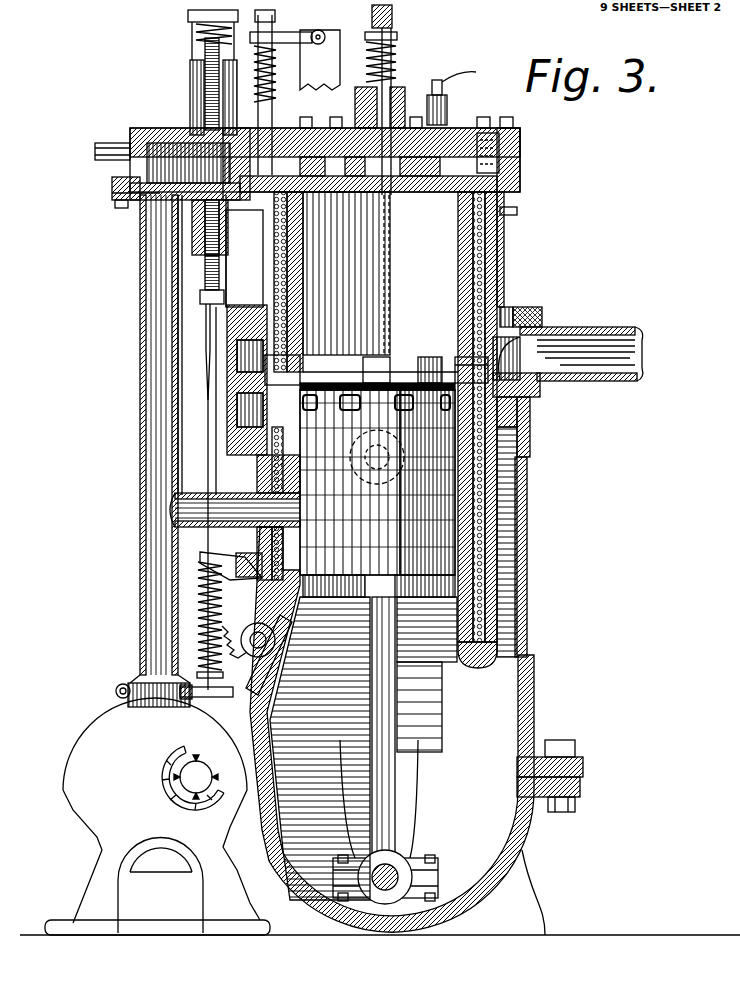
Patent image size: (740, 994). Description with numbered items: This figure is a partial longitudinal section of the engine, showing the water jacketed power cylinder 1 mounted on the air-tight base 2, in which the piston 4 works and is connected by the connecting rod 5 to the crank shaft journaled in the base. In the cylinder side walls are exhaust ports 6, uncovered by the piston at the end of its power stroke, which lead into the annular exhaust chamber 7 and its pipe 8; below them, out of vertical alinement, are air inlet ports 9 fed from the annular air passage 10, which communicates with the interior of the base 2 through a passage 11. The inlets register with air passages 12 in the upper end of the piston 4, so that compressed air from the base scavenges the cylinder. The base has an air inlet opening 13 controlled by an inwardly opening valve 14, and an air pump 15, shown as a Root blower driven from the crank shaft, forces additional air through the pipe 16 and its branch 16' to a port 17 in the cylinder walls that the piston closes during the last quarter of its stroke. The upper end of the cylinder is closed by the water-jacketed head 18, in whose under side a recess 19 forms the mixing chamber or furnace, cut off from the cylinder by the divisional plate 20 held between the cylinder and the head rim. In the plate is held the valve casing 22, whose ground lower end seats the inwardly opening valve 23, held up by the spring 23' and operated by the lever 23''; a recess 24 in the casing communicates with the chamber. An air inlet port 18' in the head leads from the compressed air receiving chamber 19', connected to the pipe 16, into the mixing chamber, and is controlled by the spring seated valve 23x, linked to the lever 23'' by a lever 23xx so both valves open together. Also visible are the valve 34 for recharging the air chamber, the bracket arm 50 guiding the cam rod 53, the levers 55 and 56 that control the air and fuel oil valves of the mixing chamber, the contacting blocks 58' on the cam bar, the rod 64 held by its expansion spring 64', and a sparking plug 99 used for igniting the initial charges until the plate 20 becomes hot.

The power cylinder 1 is at (391, 430).
The base 2 is at (416, 731).
The piston 4 is at (352, 522).
The connecting rod 5 is at (385, 725).
The exhaust ports 6 is at (410, 352).
The annular exhaust chamber 7 is at (232, 350).
The pipe 8 is at (603, 330).
The air inlet ports 9 is at (526, 458).
The annular air passage 10 is at (520, 416).
The passage 11 is at (505, 522).
The air passages 12 is at (398, 440).
The air inlet opening 13 is at (292, 700).
The inwardly opening valve 14 is at (257, 645).
The air pump 15 is at (157, 816).
The pipe 16 is at (137, 451).
The branch 16' is at (194, 512).
The port 17 is at (247, 498).
The water-jacketed head 18 is at (335, 158).
The air inlet port 18' is at (246, 258).
The recess (mixing chamber or furnace) 19 is at (408, 183).
The compressed air receiving chamber 19' is at (107, 197).
The divisional plate 20 is at (346, 273).
The valve casing 22 is at (426, 192).
The valve 23 is at (392, 191).
The spring 23' is at (410, 56).
The lever 23'' is at (408, 17).
The spring seated valve 23x is at (285, 122).
The lever 23xx is at (303, 28).
The recess 24 is at (386, 205).
The valve 34 is at (188, 8).
The bracket arm 50 is at (192, 108).
The cam rod 53 is at (207, 90).
The lever 55 is at (226, 262).
The lever 56 is at (203, 263).
The contacting blocks 58' is at (158, 333).
The rod 64 is at (150, 540).
The expansion spring 64' is at (173, 625).
The sparking plug 99 is at (447, 103).